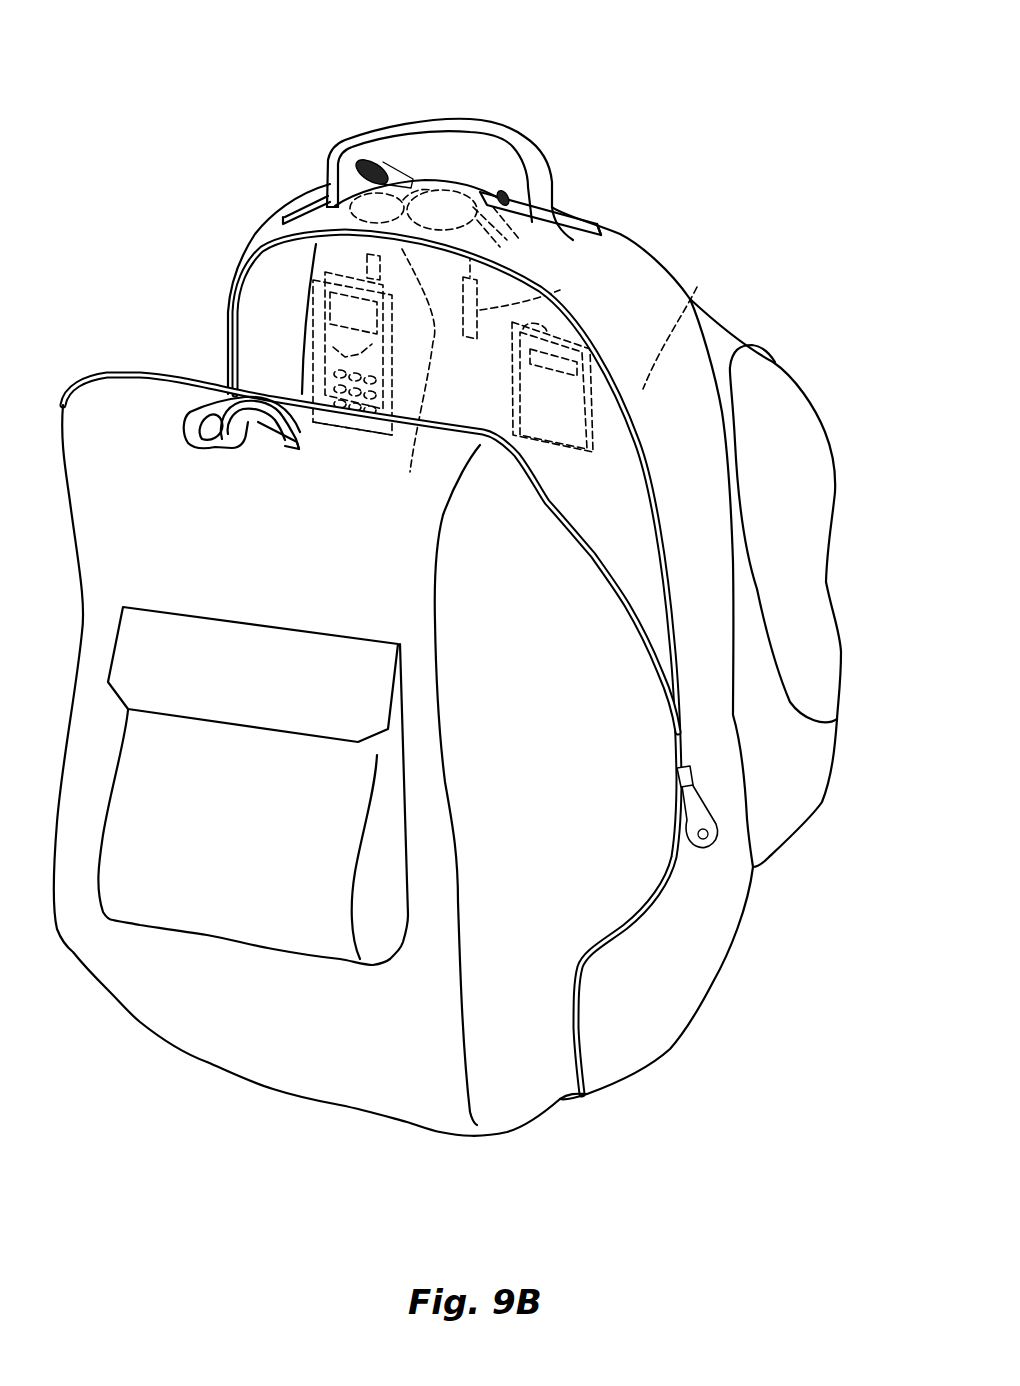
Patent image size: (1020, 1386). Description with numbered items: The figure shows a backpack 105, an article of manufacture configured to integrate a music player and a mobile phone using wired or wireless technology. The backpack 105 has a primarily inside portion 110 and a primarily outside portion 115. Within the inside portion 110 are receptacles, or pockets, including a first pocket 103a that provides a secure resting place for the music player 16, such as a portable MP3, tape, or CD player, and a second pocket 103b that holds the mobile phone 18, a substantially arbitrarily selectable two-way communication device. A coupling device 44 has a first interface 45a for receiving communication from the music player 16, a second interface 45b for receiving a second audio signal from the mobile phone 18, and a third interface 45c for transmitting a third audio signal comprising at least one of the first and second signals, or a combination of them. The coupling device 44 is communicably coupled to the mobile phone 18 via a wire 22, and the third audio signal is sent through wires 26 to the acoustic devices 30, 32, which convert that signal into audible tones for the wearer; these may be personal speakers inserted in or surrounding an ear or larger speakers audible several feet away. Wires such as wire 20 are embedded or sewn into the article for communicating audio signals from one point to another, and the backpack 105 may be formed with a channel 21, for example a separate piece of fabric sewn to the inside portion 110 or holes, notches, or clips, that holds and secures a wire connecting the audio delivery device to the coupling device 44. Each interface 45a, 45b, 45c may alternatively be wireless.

The backpack 105 is at (764, 128).
The inside portion 110 is at (604, 512).
The outside portion 115 is at (590, 810).
The music player 16 is at (697, 285).
The mobile phone 18 is at (303, 340).
The wire 20 is at (480, 330).
The channel 21 is at (560, 288).
The wire 22 is at (420, 420).
The wires 26 is at (440, 192).
The acoustic device 30 is at (382, 157).
The acoustic device 32 is at (510, 143).
The coupling device 44 is at (590, 218).
The first interface 45a is at (565, 185).
The second interface 45b is at (323, 180).
The third interface 45c is at (460, 195).
The first pocket 103a is at (335, 420).
The second pocket 103b is at (587, 450).